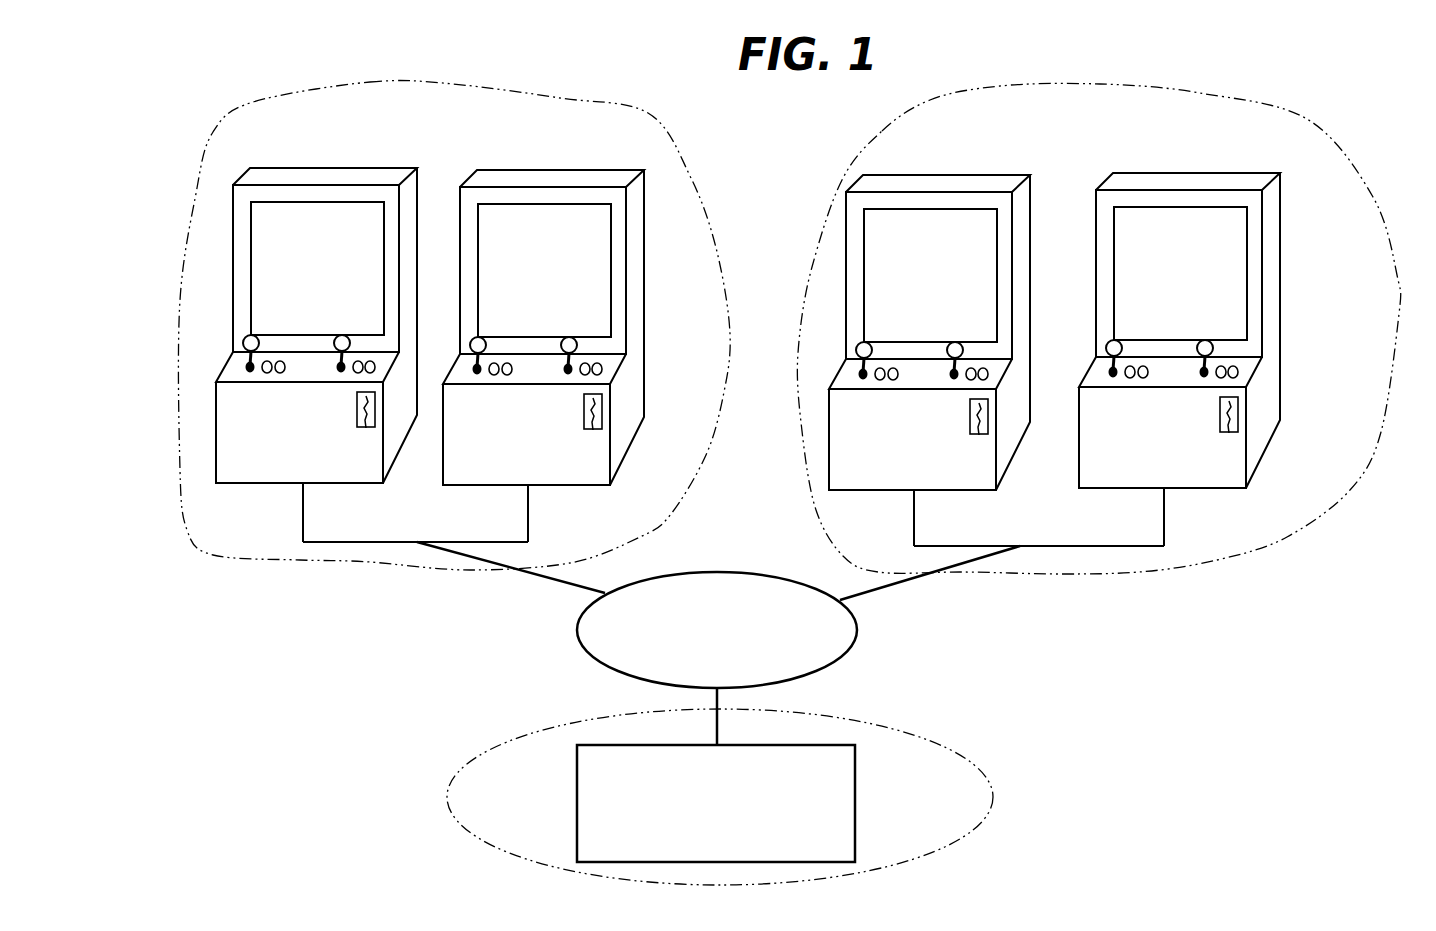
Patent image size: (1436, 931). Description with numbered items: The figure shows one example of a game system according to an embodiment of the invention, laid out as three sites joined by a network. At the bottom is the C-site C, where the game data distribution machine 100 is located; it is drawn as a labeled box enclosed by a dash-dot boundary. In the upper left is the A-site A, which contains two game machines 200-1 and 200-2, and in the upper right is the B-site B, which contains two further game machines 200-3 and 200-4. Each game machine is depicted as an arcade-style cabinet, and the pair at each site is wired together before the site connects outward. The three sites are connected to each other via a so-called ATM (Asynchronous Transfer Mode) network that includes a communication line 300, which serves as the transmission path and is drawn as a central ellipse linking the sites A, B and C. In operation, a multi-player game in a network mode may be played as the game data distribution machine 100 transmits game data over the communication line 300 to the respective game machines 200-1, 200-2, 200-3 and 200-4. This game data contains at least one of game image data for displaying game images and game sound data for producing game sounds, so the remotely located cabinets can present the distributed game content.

The game data distribution machine 100 is at (802, 745).
The game machine 200-1 is at (345, 168).
The game machine 200-2 is at (571, 170).
The game machine 200-3 is at (955, 175).
The game machine 200-4 is at (1185, 173).
The communication line 300 is at (763, 573).
The A-site A is at (648, 113).
The B-site B is at (1307, 119).
The C-site C is at (965, 740).